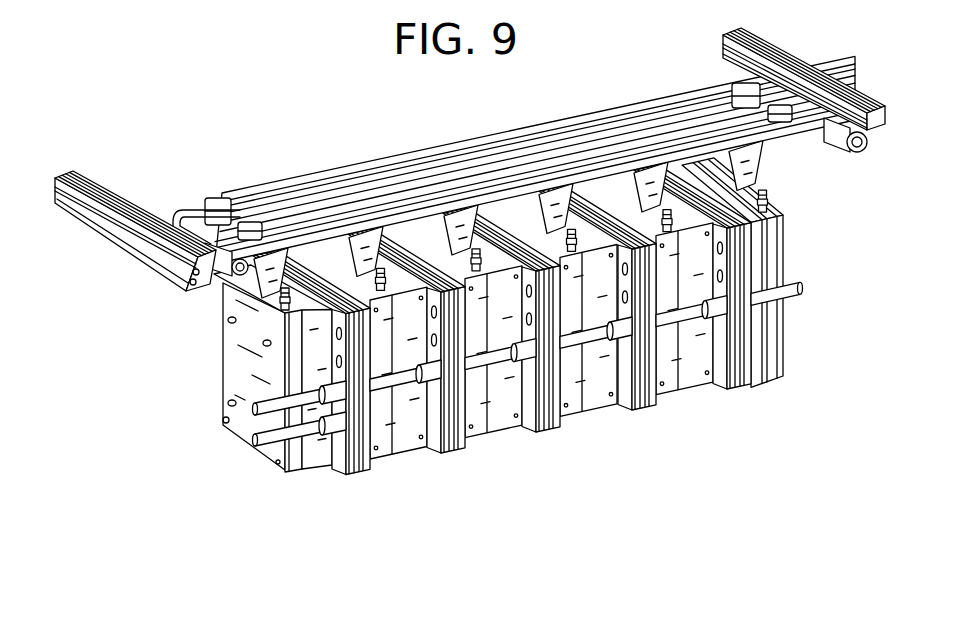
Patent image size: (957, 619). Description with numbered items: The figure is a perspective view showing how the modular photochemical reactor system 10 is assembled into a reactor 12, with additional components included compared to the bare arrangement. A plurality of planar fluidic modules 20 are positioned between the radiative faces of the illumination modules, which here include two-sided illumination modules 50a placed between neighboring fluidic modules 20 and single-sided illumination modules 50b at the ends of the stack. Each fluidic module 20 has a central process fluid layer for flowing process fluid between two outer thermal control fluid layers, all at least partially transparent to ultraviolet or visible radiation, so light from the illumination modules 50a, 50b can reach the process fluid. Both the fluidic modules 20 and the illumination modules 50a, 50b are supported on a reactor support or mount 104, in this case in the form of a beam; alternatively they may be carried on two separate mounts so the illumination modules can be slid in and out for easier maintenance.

The modular photochemical reactor system 10 is at (470, 285).
The reactor 12 is at (470, 285).
The fluidic module 20 is at (650, 412).
The two-sided illumination module 50a is at (698, 390).
The single-sided illumination module 50b is at (760, 377).
The reactor support or mount 104 is at (163, 268).